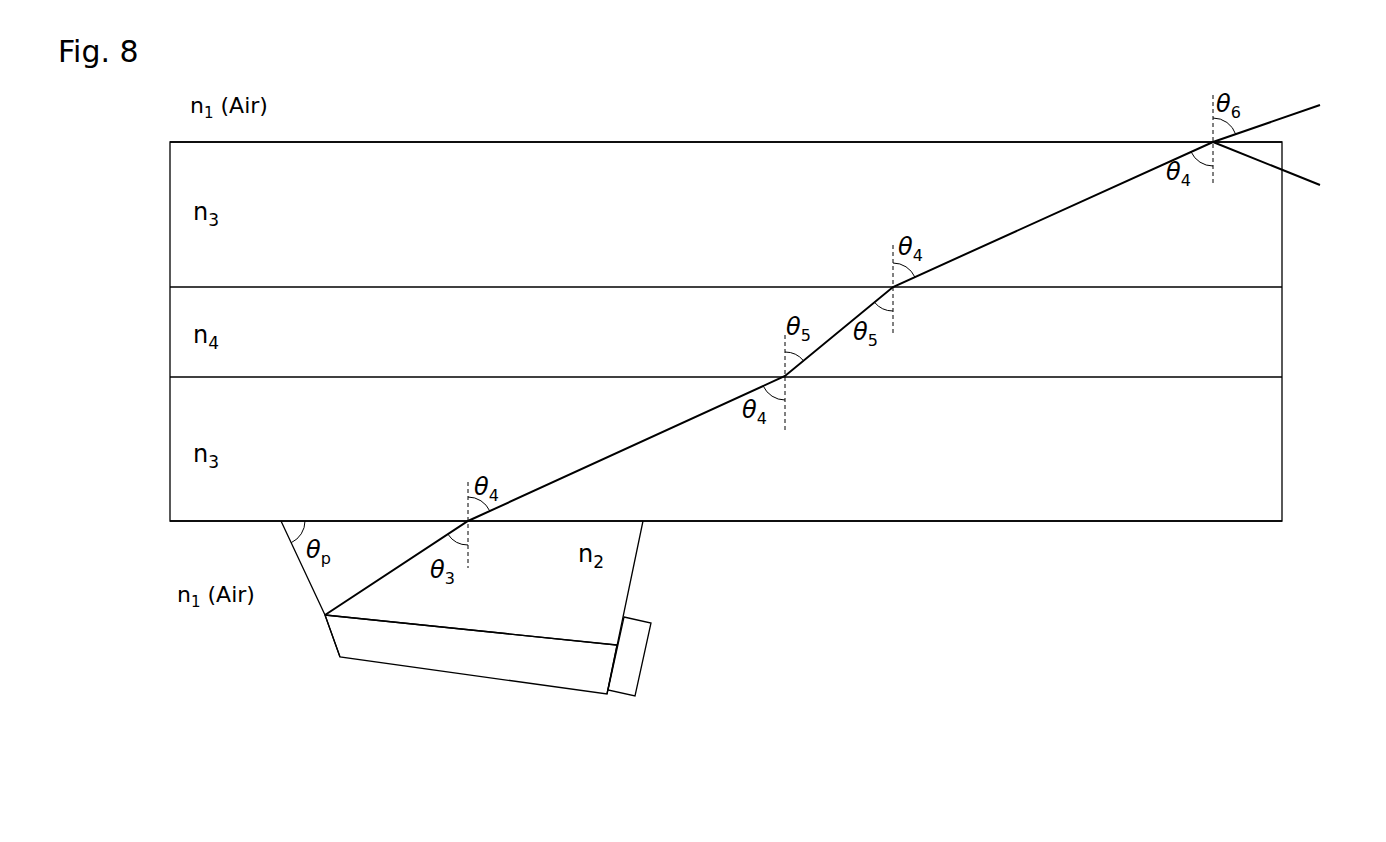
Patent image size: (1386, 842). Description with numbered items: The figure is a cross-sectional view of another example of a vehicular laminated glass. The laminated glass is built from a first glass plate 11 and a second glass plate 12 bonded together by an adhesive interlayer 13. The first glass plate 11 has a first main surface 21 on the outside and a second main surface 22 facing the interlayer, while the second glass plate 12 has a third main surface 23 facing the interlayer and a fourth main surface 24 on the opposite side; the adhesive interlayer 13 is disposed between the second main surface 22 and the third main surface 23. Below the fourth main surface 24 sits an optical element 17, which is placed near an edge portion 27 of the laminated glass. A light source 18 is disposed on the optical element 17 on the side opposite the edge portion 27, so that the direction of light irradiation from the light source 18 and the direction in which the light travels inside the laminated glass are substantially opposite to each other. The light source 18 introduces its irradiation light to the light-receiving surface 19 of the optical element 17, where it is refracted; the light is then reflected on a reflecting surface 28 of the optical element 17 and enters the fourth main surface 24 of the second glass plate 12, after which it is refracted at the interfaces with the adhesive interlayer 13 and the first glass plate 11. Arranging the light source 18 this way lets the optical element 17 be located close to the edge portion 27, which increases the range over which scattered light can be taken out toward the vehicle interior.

The first glass plate 11 is at (170, 215).
The second glass plate 12 is at (170, 455).
The adhesive interlayer 13 is at (170, 330).
The optical element 17 is at (540, 676).
The light source 18 is at (645, 657).
The light-receiving surface 19 is at (637, 555).
The first main surface 21 is at (1268, 142).
The second main surface 22 is at (1250, 288).
The third main surface 23 is at (1250, 376).
The fourth main surface 24 is at (1248, 522).
The edge portion 27 is at (138, 640).
The reflecting surface 28 is at (335, 633).